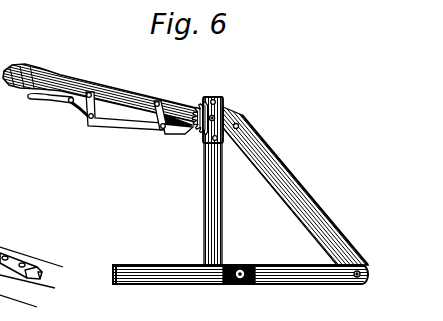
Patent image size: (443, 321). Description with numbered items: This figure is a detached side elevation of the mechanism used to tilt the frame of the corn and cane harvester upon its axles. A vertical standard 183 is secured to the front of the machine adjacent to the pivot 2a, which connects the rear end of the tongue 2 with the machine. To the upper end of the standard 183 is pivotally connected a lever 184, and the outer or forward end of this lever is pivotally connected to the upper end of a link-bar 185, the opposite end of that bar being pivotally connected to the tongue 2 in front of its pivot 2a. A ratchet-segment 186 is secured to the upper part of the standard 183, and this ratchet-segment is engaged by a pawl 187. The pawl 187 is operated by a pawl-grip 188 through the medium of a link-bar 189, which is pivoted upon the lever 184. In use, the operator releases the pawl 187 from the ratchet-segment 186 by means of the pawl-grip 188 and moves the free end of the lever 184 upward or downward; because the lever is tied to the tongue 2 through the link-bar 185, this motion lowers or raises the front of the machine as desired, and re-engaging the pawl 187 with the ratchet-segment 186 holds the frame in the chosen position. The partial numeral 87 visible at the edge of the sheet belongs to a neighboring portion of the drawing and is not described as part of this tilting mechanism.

The tongue 2 is at (278, 268).
The pivot 2a is at (239, 283).
The adjacent figure element (partial) 87 is at (0, 153).
The vertical standard 183 is at (209, 207).
The lever 184 is at (101, 93).
The link-bar 185 is at (287, 184).
The ratchet-segment 186 is at (204, 100).
The pawl 187 is at (157, 140).
The pawl-grip 188 is at (55, 104).
The link-bar 189 is at (110, 131).